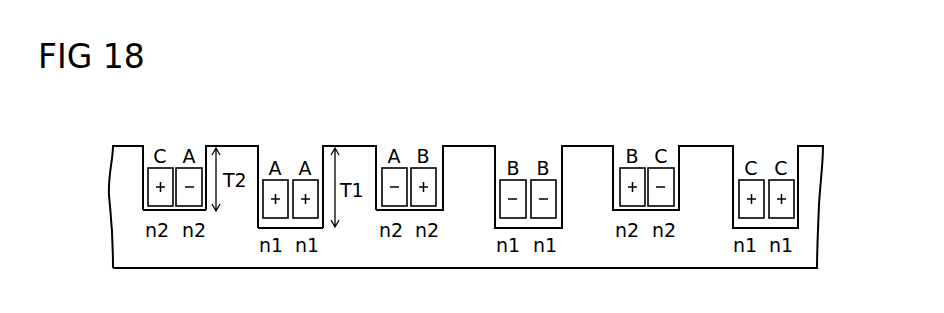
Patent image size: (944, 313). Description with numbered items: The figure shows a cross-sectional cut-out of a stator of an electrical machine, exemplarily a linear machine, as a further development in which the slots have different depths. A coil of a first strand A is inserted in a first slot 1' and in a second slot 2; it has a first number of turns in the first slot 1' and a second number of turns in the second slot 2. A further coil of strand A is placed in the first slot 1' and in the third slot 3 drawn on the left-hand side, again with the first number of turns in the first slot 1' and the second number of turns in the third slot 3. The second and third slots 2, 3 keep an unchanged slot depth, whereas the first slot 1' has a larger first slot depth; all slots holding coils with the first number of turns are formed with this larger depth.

The third slot 3 is at (143, 210).
The first slot 1' is at (232, 227).
The second slot 2 is at (376, 210).